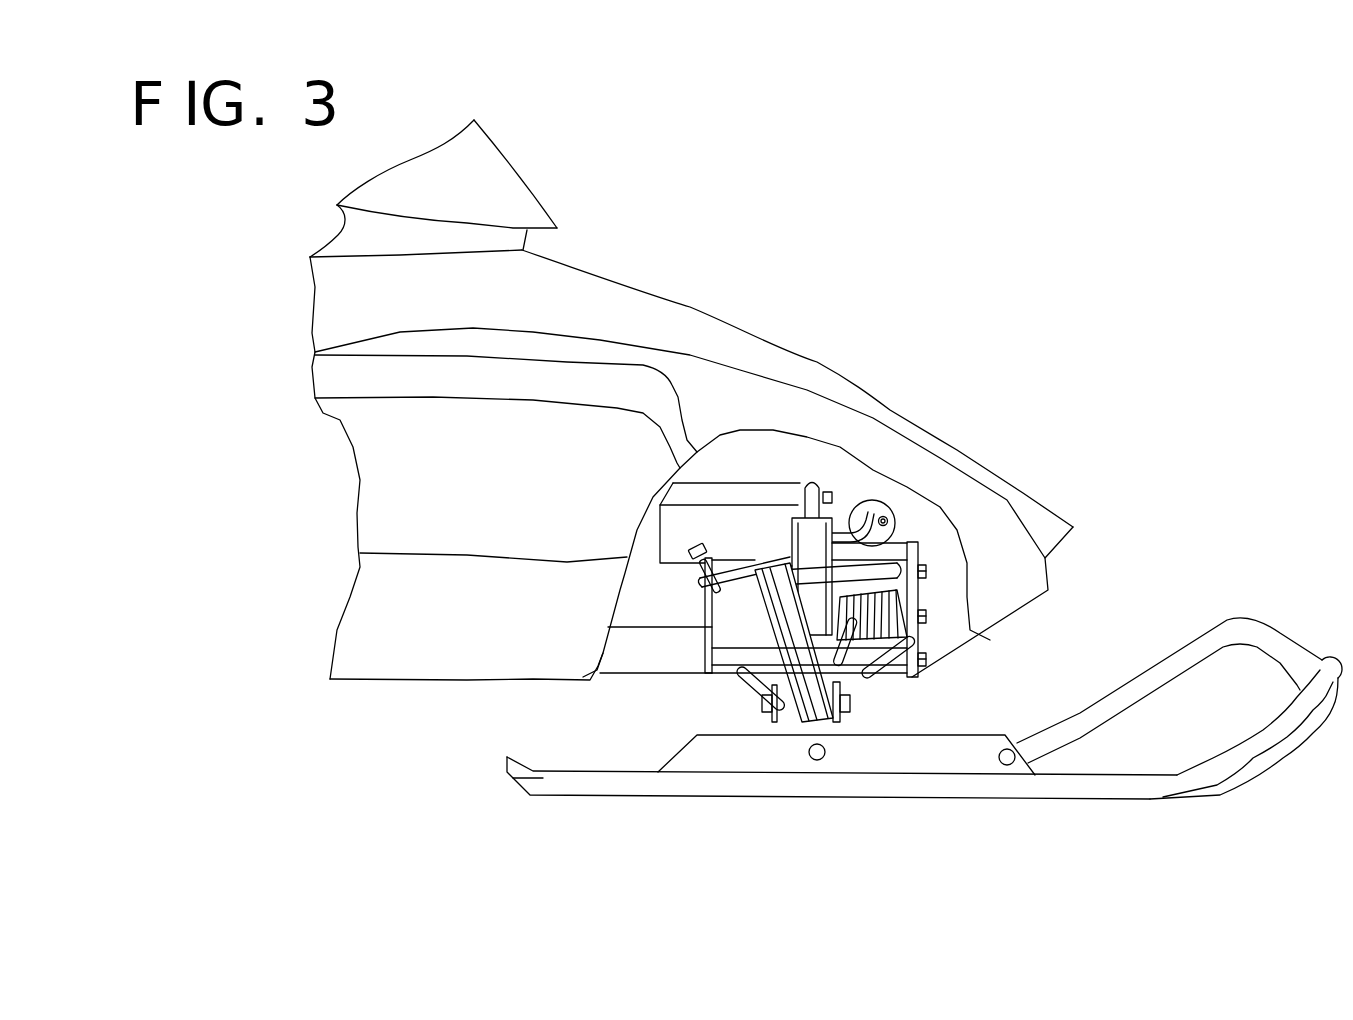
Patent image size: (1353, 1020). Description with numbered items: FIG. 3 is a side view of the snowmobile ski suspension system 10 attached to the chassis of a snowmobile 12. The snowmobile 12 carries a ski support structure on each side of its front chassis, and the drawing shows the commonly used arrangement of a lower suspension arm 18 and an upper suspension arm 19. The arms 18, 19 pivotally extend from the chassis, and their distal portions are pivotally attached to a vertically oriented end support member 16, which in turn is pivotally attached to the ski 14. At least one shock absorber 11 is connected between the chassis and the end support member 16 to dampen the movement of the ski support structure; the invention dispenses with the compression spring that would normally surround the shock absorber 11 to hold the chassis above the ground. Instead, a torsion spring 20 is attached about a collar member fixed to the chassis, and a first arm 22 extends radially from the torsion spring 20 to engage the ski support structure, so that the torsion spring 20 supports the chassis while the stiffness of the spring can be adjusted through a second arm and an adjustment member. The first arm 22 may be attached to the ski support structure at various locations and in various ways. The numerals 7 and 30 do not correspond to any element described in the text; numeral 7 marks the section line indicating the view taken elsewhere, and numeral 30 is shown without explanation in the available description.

The section line 7- 7 is at (892, 202).
The snowmobile ski suspension system 10 is at (1040, 193).
The shock absorber 11 is at (810, 527).
The snowmobile 12 is at (940, 443).
The ski 14 is at (507, 772).
The end support member 16 is at (807, 705).
The lower suspension arm 18 is at (755, 688).
The upper suspension arm 19 is at (752, 583).
The torsion spring 20 is at (880, 613).
The first arm 22 is at (842, 686).
The adjustment bolt 30 is at (926, 615).